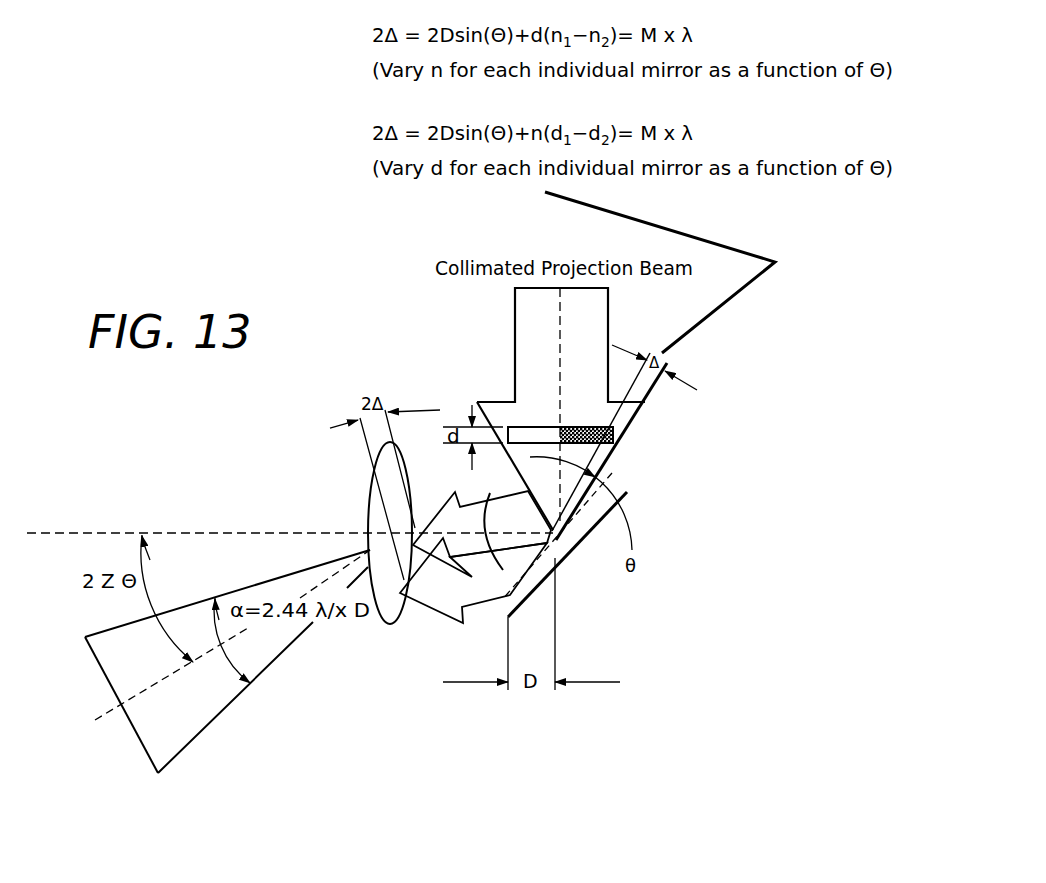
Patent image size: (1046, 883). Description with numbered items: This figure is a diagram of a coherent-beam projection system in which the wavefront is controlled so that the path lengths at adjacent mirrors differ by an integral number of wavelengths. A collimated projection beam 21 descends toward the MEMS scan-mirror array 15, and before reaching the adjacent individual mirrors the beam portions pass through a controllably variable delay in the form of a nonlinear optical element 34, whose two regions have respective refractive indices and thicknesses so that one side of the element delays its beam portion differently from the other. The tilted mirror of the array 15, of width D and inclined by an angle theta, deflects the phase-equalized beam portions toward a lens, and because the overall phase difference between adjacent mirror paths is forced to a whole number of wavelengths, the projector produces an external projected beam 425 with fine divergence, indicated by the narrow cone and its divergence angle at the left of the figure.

The nonlinear optical element 34 is at (518, 435).
The MEMS scan-mirror array 15 is at (540, 582).
The collimated projection beam 21 is at (466, 520).
The external projected beam 425 is at (198, 722).